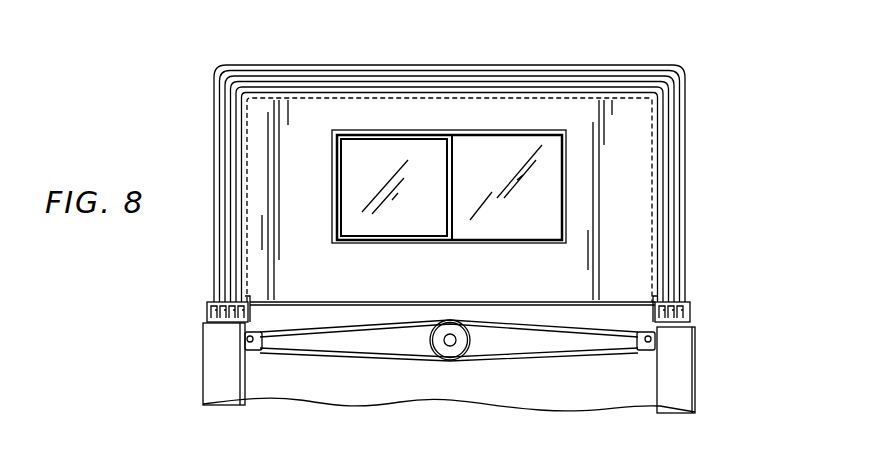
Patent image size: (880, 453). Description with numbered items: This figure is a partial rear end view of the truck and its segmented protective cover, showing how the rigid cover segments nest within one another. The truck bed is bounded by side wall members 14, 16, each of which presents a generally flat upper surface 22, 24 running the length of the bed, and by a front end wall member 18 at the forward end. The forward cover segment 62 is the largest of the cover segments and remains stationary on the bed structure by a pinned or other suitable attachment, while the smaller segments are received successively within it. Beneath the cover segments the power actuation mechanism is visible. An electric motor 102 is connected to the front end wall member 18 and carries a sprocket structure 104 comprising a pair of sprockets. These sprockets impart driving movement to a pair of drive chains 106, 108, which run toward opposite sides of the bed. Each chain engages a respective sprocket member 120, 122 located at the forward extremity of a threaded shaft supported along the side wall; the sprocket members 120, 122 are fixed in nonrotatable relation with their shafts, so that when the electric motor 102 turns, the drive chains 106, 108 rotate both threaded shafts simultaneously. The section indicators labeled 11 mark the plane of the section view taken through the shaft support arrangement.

The forward cover segment 62 is at (362, 67).
The upper surface 24 is at (207, 322).
The upper surface 22 is at (690, 325).
The side wall member 16 is at (203, 395).
The side wall member 14 is at (690, 392).
The sprocket member 120 is at (262, 348).
The sprocket member 122 is at (634, 352).
The drive chain 106 is at (352, 360).
The drive chain 108 is at (535, 360).
The sprocket structure 104 is at (437, 344).
The electric motor 102 is at (452, 344).
The front end wall member 18 is at (288, 398).
The section line 11 is at (605, 290).